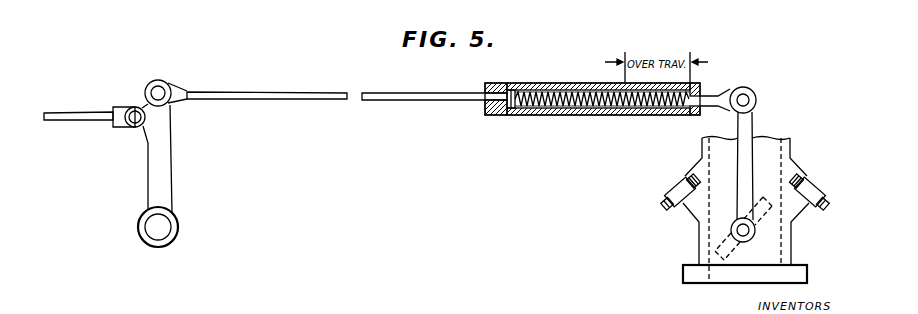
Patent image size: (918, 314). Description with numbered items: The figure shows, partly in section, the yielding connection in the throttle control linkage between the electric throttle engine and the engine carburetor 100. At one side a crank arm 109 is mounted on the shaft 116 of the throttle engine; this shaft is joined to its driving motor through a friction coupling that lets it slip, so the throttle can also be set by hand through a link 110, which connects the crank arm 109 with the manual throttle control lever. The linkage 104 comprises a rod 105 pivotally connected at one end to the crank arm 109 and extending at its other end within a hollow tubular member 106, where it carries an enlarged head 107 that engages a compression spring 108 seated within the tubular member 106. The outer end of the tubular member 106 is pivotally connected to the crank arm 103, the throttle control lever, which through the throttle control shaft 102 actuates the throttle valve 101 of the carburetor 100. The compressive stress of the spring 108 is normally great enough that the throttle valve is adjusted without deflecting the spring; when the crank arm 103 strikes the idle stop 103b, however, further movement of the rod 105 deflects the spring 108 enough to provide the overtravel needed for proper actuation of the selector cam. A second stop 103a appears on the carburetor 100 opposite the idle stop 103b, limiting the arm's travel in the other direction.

The carburetor 100 is at (770, 239).
The throttle valve 101 is at (717, 283).
The throttle control shaft 102 is at (744, 236).
The crank arm 103 is at (746, 133).
The adjusting bolt 103a is at (672, 220).
The idle stop 103b is at (852, 198).
The linkage 104 is at (461, 83).
The rod 105 is at (485, 97).
The hollow tubular member 106 is at (582, 115).
The enlarged head 107 is at (510, 109).
The compression spring 108 is at (568, 87).
The crank arm 109 is at (158, 178).
The link 110 is at (88, 119).
The shaft 116 is at (167, 227).